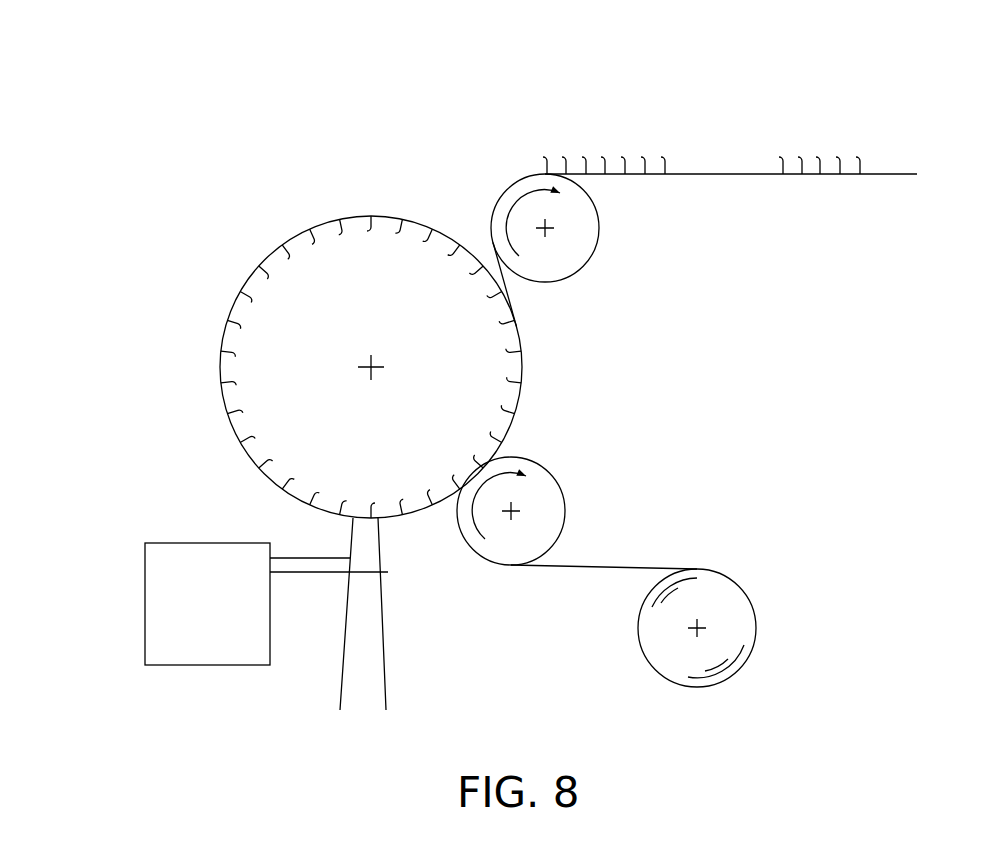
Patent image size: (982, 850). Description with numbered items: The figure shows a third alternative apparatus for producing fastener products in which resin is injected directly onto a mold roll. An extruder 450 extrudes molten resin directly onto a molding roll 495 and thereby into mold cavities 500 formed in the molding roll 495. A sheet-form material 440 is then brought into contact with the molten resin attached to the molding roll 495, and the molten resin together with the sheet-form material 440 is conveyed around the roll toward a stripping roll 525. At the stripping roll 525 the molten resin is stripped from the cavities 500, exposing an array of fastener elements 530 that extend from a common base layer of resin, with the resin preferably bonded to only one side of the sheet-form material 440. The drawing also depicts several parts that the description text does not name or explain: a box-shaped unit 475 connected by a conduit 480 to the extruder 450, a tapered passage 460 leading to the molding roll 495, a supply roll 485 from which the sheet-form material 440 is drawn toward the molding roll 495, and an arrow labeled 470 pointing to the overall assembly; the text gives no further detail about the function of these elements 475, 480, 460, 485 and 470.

The mold cavities 500 is at (295, 265).
The molding roll 495 is at (265, 380).
The stripping roll 525 is at (568, 263).
The fastener elements 530 is at (830, 148).
The sheet-form material 440 is at (603, 567).
The supply roll 485 is at (742, 627).
The feed box 475 is at (168, 568).
The feed conduit 480 is at (298, 557).
The chute 460 is at (367, 548).
The extruder 450 is at (363, 669).
The feeding apparatus 470 is at (143, 678).